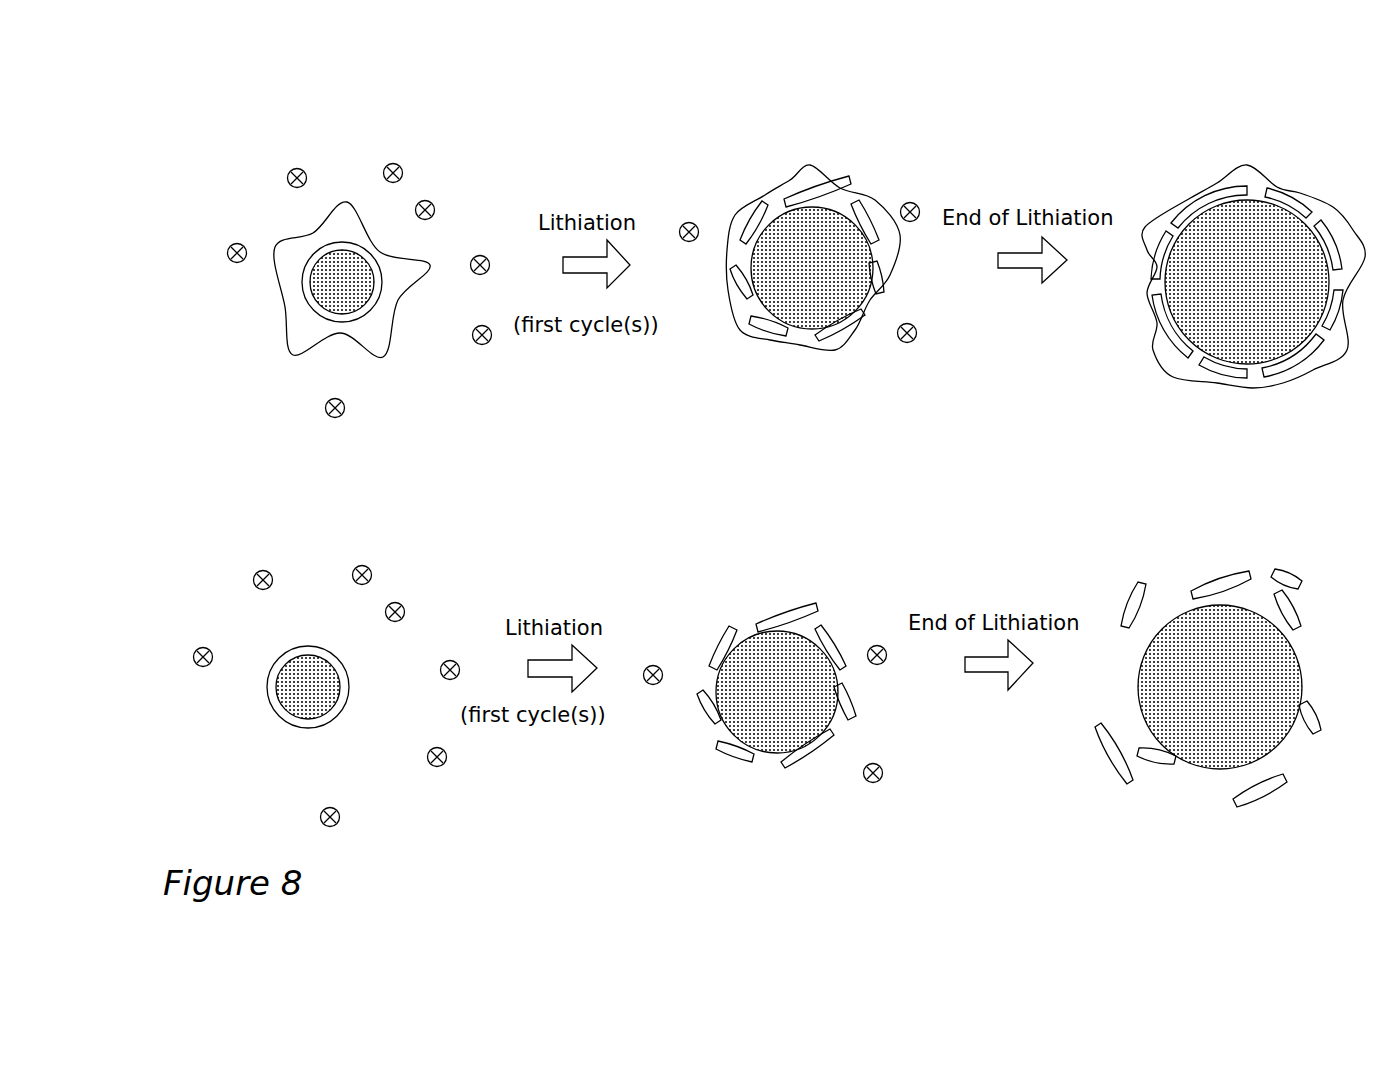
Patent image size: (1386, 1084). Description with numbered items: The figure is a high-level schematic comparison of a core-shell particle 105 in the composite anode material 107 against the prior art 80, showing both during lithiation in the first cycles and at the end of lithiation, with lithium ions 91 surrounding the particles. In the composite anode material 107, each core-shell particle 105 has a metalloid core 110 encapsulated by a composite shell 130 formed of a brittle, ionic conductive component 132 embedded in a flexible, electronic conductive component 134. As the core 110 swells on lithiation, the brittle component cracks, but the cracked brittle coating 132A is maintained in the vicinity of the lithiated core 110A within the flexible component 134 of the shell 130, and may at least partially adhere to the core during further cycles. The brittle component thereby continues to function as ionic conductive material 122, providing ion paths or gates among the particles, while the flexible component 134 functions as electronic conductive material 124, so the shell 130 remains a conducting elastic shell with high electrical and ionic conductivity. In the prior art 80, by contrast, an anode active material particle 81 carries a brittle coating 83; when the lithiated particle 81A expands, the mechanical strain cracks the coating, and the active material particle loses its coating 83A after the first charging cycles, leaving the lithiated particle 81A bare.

The composite anode material 107 is at (262, 115).
The prior art 80 is at (228, 545).
The lithium ion 91 is at (393, 164).
The core-shell particle 105 is at (266, 193).
The core 110 is at (340, 300).
The lithiated core 110A is at (1213, 325).
The brittle, ionic conductive component 132 is at (380, 310).
The cracked brittle coating 132A is at (750, 332).
The flexible, electronic conductive component 134 is at (373, 333).
The composite shell 130 is at (479, 355).
The ionic conductive material 122 is at (1218, 370).
The electronic conductive material 124 is at (1322, 362).
The anode active material particle 81 is at (295, 697).
The lithiated particle 81A is at (1235, 735).
The brittle coating 83 is at (320, 728).
The coating 83A is at (783, 613).